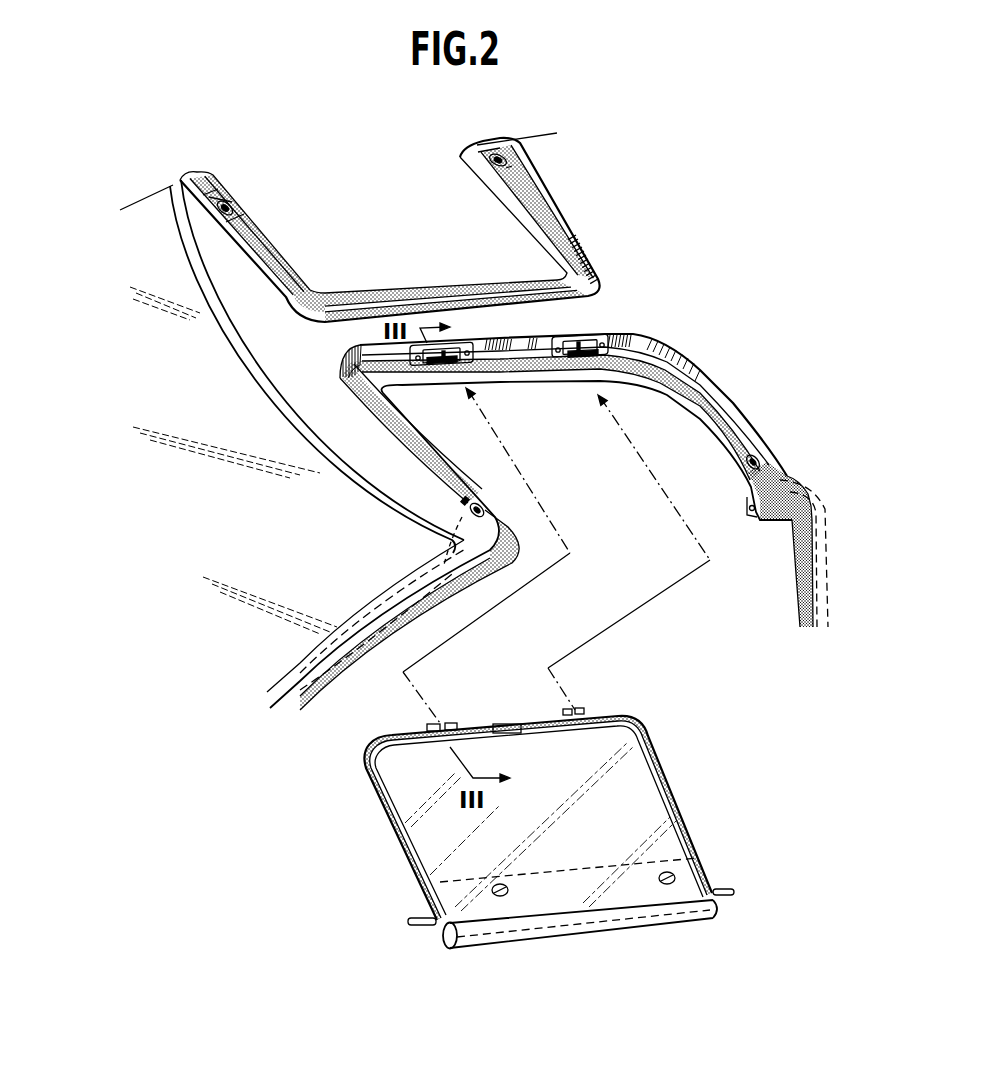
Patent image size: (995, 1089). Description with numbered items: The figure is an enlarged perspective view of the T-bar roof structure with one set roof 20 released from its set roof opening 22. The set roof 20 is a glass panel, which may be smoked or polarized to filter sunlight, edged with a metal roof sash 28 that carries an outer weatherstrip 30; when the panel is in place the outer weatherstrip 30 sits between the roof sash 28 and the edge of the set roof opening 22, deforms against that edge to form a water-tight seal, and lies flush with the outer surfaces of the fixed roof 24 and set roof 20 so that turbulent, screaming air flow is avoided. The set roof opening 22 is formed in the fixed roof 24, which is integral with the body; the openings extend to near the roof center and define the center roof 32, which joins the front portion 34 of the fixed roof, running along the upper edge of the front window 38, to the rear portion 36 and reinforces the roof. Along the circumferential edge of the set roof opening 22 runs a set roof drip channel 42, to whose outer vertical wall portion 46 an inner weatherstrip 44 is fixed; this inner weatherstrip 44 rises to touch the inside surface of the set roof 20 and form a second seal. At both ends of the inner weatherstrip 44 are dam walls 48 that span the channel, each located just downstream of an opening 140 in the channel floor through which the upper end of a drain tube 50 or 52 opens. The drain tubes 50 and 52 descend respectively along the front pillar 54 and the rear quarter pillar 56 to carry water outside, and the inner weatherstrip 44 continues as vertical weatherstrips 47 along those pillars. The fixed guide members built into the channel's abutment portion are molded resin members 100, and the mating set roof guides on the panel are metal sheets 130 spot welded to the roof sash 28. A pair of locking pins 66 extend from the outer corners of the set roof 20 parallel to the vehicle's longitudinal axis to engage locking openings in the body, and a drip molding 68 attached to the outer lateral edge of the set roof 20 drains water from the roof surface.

The set roof 20 is at (558, 825).
The set roof opening 22 is at (548, 418).
The fixed roof 24 is at (778, 280).
The roof sash 28 is at (667, 783).
The outer weatherstrip 30 is at (683, 807).
The center roof 32 is at (478, 322).
The front portion 34 is at (270, 350).
The rear portion 36 is at (597, 249).
The front window 38 is at (148, 217).
The set roof drip channel 42 is at (644, 358).
The inner weatherstrip 44 is at (700, 410).
The outer vertical wall portion 46 is at (707, 443).
The vertical weatherstrip 47 is at (360, 668).
The dam wall 48 is at (767, 477).
The drain tube 50 is at (422, 590).
The drain tube 52 is at (817, 563).
The front pillar 54 is at (347, 645).
The rear quarter pillar 56 is at (813, 543).
The locking pin 66 is at (423, 927).
The drip molding 68 is at (557, 927).
The molded resin member 100 is at (445, 363).
The metal sheet 130 is at (444, 713).
The opening 140 is at (754, 455).